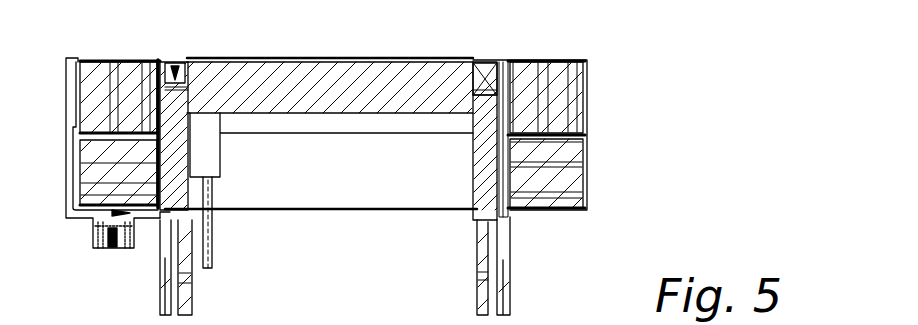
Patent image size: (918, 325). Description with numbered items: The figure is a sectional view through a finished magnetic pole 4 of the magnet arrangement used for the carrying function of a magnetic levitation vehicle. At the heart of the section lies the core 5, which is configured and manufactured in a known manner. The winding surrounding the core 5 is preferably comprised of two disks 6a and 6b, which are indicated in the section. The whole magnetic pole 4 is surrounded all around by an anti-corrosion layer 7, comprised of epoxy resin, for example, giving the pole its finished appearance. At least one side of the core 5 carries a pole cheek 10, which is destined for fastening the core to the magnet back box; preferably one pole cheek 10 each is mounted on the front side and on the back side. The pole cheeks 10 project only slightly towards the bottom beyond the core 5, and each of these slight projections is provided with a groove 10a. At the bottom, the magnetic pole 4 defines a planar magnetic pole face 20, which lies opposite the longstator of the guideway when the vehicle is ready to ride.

The magnetic pole 4 is at (626, 111).
The core 5 is at (400, 80).
The disk 6a is at (563, 92).
The disk 6b is at (572, 182).
The anti-corrosion layer 7 is at (161, 60).
The pole cheek 10 is at (487, 173).
The groove 10a is at (495, 257).
The magnetic pole face 20 is at (226, 251).